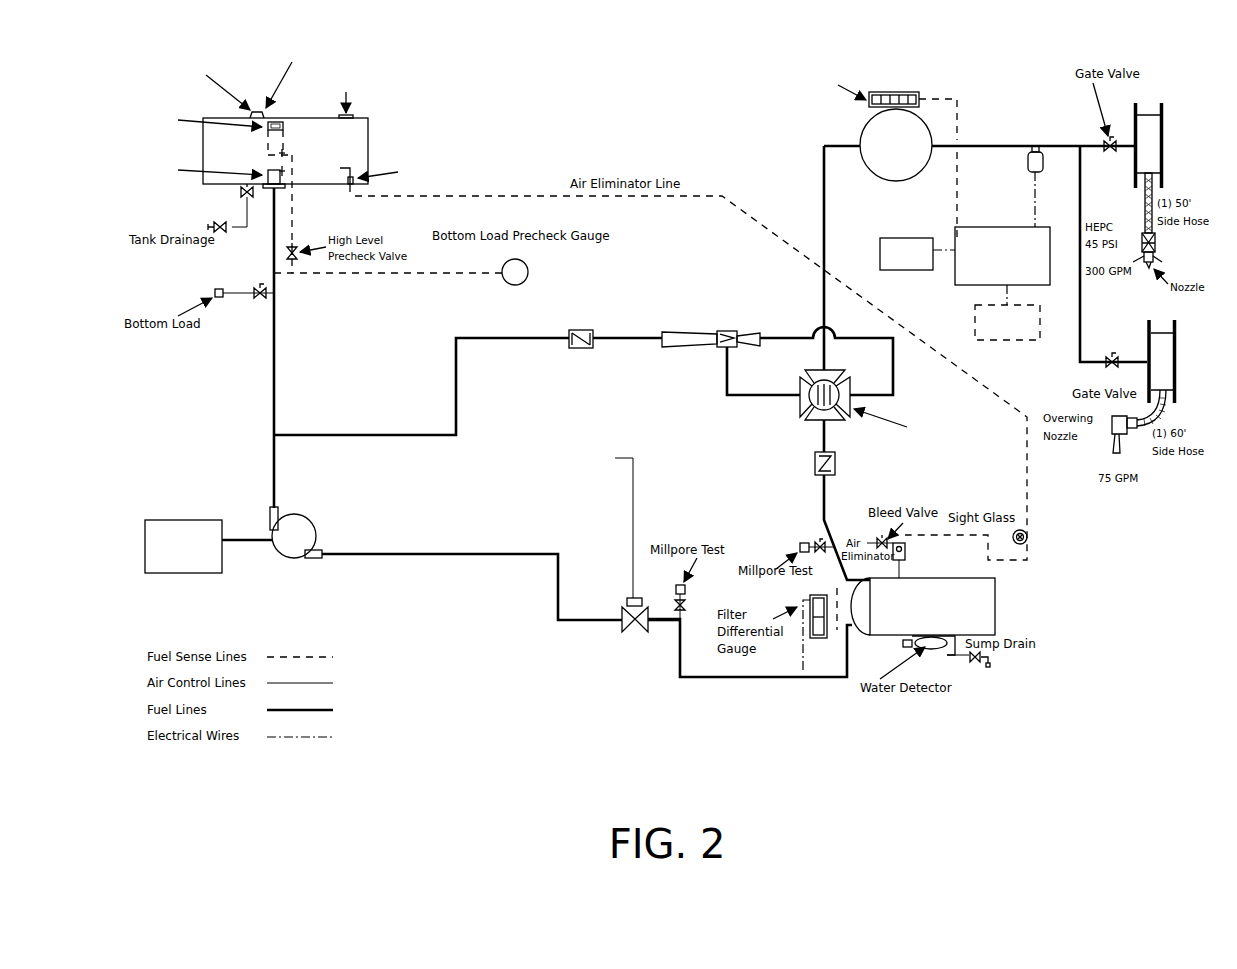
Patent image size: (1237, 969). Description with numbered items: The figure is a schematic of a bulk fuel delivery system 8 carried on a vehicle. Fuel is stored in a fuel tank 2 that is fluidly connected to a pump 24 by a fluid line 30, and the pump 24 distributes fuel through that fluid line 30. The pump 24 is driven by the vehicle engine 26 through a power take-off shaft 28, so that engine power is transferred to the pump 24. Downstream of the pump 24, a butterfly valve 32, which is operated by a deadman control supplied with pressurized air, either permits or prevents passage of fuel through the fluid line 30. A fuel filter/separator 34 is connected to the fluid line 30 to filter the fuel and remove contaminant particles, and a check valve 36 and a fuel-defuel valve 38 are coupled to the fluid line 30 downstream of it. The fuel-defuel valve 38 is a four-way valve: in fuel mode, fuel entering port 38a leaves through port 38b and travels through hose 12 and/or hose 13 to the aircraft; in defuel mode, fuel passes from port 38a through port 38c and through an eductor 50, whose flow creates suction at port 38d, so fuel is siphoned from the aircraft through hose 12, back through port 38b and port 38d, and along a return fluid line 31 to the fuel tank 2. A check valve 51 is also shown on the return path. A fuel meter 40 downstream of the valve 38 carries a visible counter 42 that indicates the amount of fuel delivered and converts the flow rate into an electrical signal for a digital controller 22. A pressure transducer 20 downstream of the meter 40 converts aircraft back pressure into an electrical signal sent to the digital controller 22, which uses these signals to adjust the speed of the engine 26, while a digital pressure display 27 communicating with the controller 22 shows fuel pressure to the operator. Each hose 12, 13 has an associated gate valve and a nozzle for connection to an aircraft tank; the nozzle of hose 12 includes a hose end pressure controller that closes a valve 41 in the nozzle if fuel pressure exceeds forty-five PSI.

The bulk fuel delivery system 8 is at (643, 59).
The fuel tank 2 is at (368, 140).
The hose 12 is at (1153, 140).
The second hose 13 is at (1167, 355).
The pressure transducer 20 is at (1030, 165).
The digital controller 22 is at (970, 243).
The pump 24 is at (300, 520).
The engine 26 is at (188, 528).
The digital pressure display 27 is at (892, 240).
The power take-off shaft 28 is at (247, 542).
The fluid line 30 is at (274, 378).
The return fluid line 31 is at (632, 338).
The butterfly valve 32 is at (638, 632).
The fuel filter/separator 34 is at (987, 610).
The check valve 36 is at (813, 462).
The fuel-defuel valve 38 is at (844, 399).
The port 38a is at (833, 420).
The port 38b is at (823, 370).
The port 38c is at (850, 387).
The port 38d is at (803, 385).
The fuel meter 40 is at (868, 138).
The valve 41 is at (1155, 240).
The counter 42 is at (908, 92).
The eductor 50 is at (727, 332).
The check valve 51 is at (582, 330).